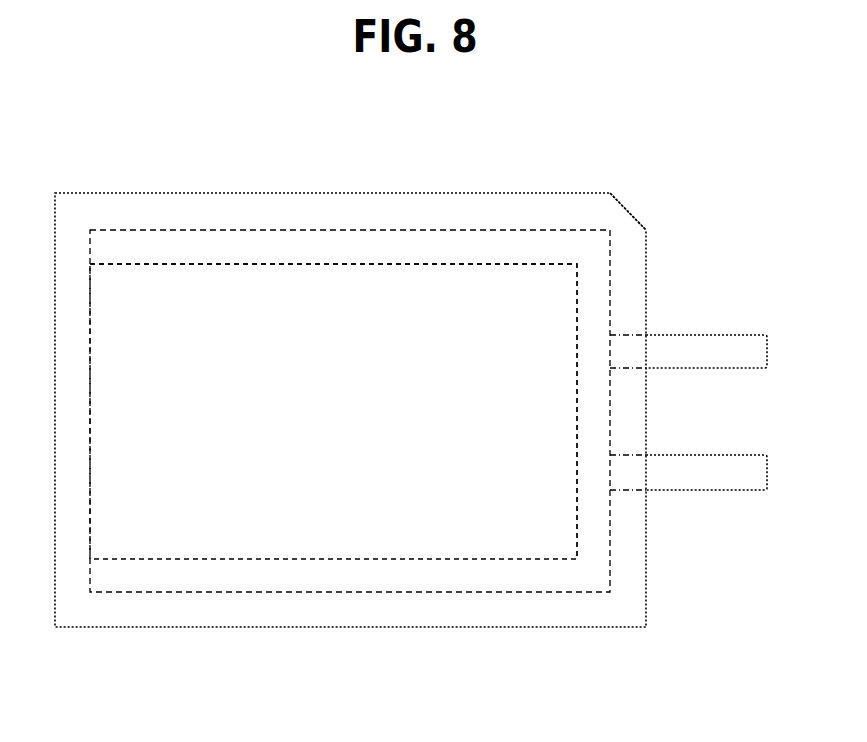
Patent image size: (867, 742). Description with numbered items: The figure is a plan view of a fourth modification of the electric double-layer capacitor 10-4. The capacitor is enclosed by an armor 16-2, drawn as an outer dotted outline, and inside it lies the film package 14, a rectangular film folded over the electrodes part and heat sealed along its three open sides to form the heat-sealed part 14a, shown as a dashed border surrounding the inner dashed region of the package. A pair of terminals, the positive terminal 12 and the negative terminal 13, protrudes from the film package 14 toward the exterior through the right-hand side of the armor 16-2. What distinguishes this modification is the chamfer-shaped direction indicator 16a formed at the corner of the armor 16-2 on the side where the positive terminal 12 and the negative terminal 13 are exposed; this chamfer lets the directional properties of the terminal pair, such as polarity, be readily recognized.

The electric double-layer capacitor 10-4 is at (89, 186).
The armor 16-2 is at (139, 210).
The film package 14 is at (425, 300).
The heat-sealed part 14a is at (493, 245).
The direction indicator 16a is at (630, 215).
The positive terminal 12 is at (712, 345).
The negative terminal 13 is at (712, 478).